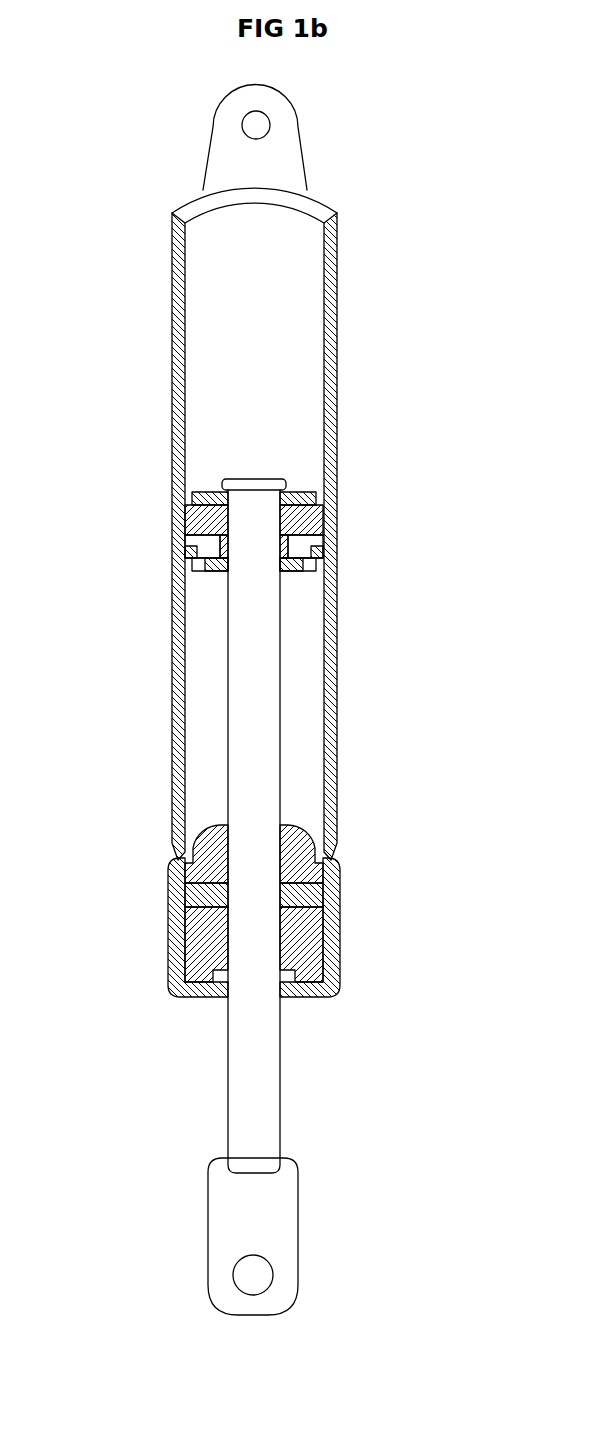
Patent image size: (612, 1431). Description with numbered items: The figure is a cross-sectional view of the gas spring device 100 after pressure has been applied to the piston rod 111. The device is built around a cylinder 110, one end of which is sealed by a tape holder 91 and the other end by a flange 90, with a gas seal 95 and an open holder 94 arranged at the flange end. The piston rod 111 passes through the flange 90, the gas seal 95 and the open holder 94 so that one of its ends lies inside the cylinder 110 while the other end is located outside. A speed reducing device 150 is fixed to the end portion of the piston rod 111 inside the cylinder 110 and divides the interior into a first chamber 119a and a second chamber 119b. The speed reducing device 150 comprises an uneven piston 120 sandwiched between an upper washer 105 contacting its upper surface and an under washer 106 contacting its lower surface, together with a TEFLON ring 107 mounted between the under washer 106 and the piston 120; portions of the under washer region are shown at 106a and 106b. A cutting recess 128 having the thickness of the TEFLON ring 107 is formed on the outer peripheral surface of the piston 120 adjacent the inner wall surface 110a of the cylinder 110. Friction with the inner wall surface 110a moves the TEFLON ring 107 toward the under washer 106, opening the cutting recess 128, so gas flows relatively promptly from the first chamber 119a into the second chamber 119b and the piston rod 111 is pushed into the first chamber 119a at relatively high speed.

The gas spring device 100 is at (361, 293).
The tape holder 91 is at (195, 205).
The cylinder 110 is at (168, 393).
The inner wall surface of the cylinder 110a is at (331, 327).
The first chamber 119a is at (197, 285).
The second chamber 119b is at (310, 698).
The speed reducing device 150 is at (199, 484).
The upper washer 105 is at (325, 486).
The uneven piston 120 is at (328, 513).
The cutting recess 128 is at (190, 520).
The under washer 106 is at (325, 545).
The TEFLON ring 107 is at (190, 553).
The left seal portion 106a is at (198, 568).
The right seal portion 106b is at (318, 565).
The open holder 94 is at (212, 827).
The gas seal 95 is at (318, 900).
The flange 90 is at (190, 938).
The piston rod 111 is at (263, 1077).